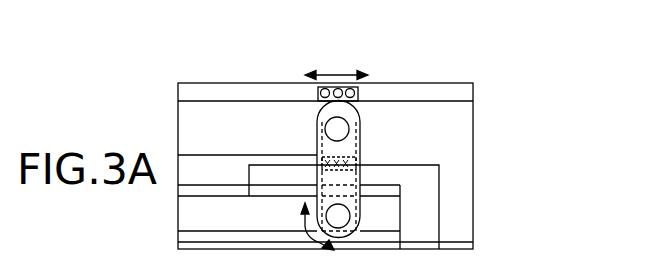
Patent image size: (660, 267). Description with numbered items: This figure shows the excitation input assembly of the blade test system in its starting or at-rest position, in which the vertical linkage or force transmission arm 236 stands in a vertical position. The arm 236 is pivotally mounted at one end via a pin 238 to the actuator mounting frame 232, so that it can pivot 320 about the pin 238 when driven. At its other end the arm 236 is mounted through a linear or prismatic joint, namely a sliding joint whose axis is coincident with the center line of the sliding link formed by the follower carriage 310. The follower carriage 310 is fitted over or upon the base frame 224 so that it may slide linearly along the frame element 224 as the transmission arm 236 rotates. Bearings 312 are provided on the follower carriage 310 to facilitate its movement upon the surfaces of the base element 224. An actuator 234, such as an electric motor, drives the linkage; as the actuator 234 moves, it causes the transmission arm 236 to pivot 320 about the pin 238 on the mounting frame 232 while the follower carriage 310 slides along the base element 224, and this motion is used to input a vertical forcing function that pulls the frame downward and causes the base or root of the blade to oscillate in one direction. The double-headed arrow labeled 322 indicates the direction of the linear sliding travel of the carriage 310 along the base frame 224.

The base frame 224 is at (463, 112).
The actuator mounting frame 232 is at (398, 193).
The actuator 234 is at (397, 170).
The force transmission arm 236 is at (320, 180).
The pin 238 is at (338, 216).
The follower carriage 310 is at (320, 96).
The bearings 312 is at (341, 98).
The pivot 320 is at (305, 233).
The translation direction arrow 322 is at (336, 70).